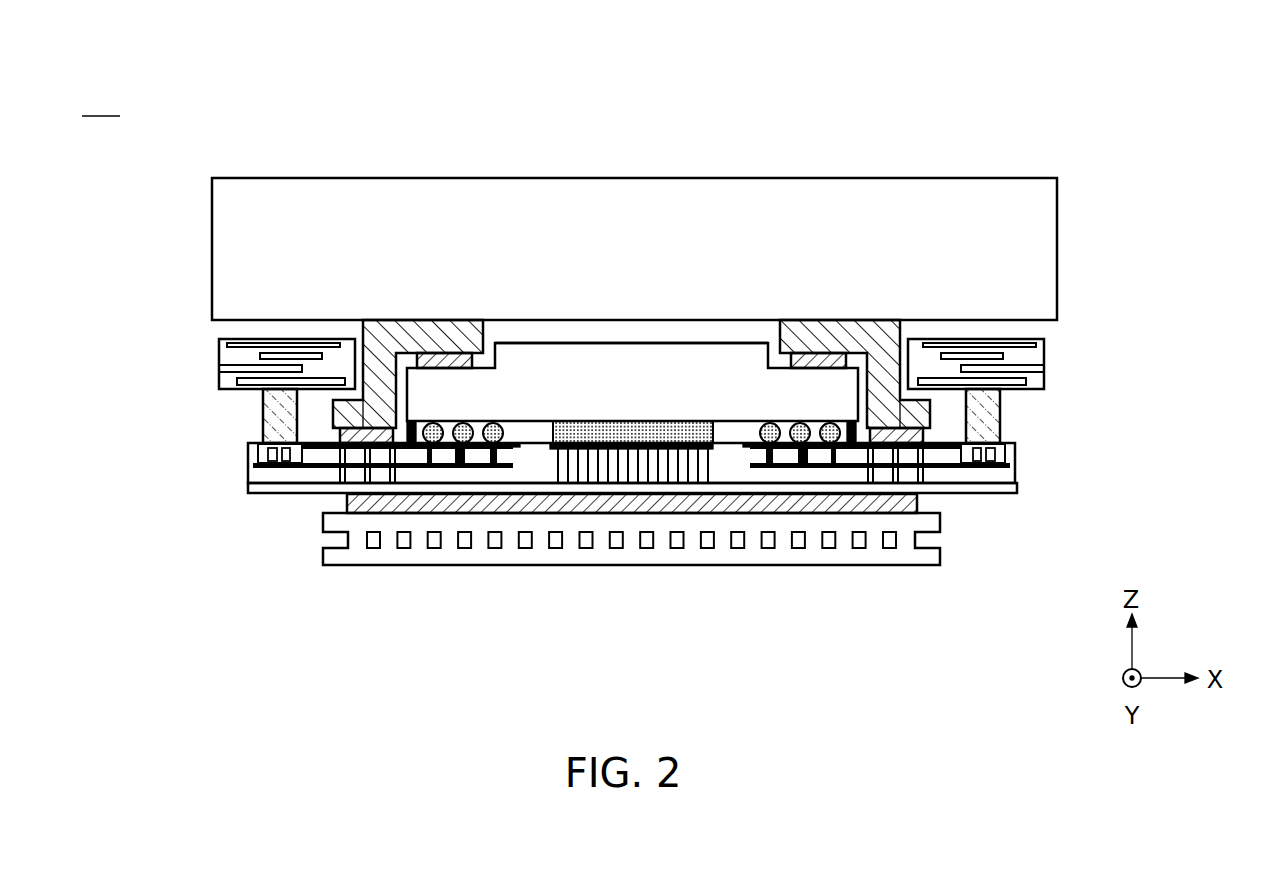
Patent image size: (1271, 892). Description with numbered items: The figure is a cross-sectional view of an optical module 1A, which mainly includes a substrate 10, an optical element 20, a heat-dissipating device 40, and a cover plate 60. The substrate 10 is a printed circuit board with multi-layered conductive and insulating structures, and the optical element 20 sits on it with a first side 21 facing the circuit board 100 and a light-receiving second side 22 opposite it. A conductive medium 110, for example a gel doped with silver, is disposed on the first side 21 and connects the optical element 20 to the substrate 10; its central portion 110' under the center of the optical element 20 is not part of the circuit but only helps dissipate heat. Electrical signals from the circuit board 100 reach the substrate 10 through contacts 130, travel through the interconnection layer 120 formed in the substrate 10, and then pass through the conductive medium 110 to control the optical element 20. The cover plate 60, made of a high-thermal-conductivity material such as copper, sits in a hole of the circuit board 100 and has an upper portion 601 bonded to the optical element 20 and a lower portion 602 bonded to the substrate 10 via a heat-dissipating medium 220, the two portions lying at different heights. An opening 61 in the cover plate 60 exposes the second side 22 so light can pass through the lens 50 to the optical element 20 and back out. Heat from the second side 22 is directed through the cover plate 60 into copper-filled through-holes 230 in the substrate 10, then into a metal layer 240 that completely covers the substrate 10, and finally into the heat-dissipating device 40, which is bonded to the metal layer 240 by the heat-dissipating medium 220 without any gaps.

The optical module 1A is at (101, 102).
The substrate 10 is at (1015, 458).
The optical element 20 is at (600, 400).
The first side 21 is at (422, 440).
The second side 22 is at (450, 440).
The heat-dissipating device 40 is at (940, 555).
The lens 50 is at (1043, 255).
The cover plate 60 is at (372, 328).
The opening 61 is at (672, 333).
The upper portion 601 is at (465, 360).
The lower portion 602 is at (343, 412).
The circuit board 100 is at (1045, 352).
The conductive medium 110 is at (631, 273).
The central portion 110' is at (631, 529).
The interconnection layer 120 is at (258, 455).
The contacts 130 is at (1000, 414).
The heat-dissipating medium 220 is at (445, 440).
The through-holes 230 is at (337, 477).
The metal layer 240 is at (1017, 490).